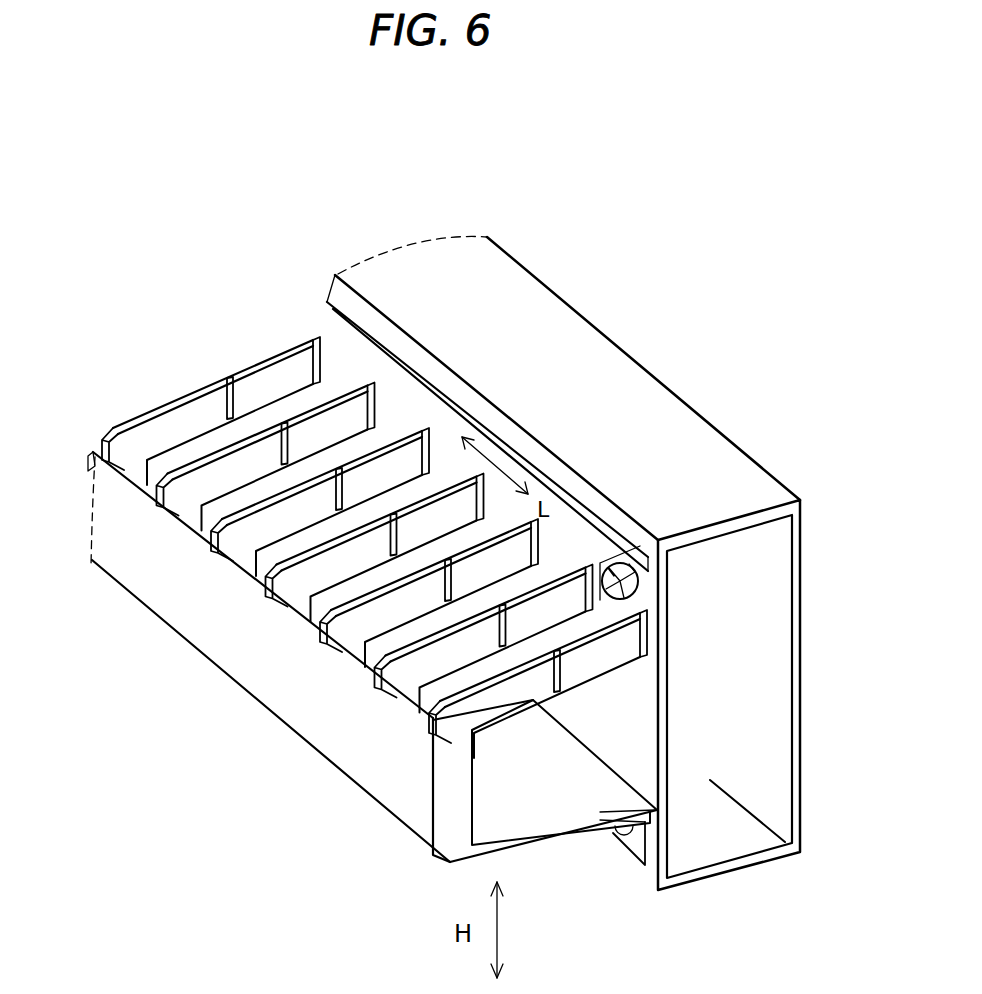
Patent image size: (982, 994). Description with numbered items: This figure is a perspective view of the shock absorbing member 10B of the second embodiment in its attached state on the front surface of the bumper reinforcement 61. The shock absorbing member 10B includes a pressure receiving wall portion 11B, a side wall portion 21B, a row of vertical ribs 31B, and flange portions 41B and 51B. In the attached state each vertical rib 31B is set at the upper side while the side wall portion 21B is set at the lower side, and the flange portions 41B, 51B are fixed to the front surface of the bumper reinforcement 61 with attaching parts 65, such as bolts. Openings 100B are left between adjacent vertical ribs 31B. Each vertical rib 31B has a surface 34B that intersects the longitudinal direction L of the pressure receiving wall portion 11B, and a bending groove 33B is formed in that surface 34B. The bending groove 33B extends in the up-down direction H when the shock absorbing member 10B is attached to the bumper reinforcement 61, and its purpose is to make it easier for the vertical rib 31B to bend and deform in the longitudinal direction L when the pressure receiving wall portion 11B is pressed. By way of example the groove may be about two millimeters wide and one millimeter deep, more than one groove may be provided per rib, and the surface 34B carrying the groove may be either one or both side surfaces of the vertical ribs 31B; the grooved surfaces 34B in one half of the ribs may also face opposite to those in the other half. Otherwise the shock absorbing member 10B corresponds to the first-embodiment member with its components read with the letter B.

The shock absorbing member 10B is at (144, 385).
The pressure receiving wall portion 11B is at (298, 700).
The side wall portion 21B is at (541, 842).
The vertical rib 31B is at (450, 487).
The bending groove 33B is at (336, 477).
The surface of vertical rib 34B is at (190, 417).
The flange portion 41B is at (633, 862).
The flange portion 51B is at (632, 555).
The bumper reinforcement 61 is at (610, 357).
The attaching part 65 is at (602, 565).
The opening 100B is at (437, 494).